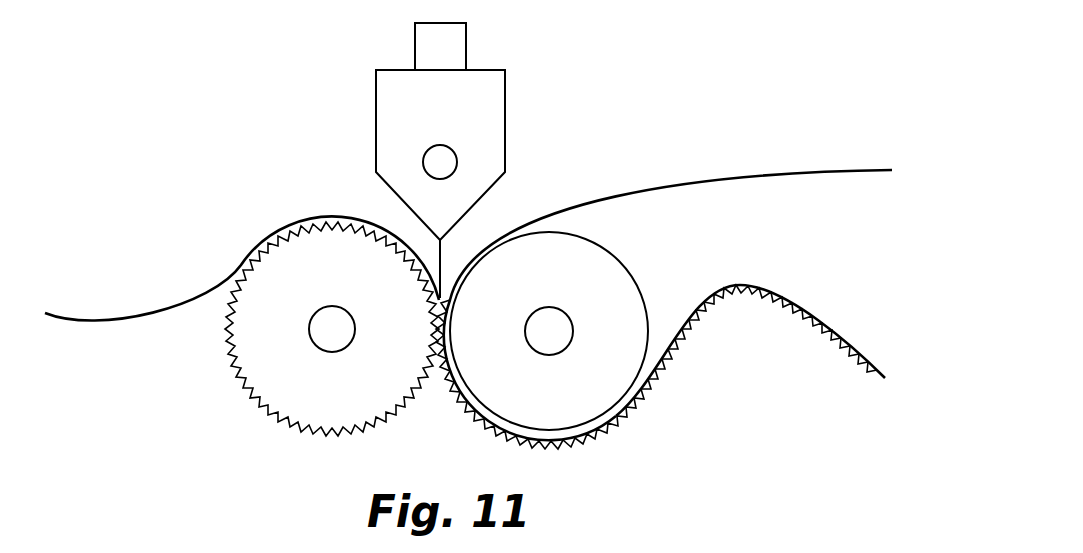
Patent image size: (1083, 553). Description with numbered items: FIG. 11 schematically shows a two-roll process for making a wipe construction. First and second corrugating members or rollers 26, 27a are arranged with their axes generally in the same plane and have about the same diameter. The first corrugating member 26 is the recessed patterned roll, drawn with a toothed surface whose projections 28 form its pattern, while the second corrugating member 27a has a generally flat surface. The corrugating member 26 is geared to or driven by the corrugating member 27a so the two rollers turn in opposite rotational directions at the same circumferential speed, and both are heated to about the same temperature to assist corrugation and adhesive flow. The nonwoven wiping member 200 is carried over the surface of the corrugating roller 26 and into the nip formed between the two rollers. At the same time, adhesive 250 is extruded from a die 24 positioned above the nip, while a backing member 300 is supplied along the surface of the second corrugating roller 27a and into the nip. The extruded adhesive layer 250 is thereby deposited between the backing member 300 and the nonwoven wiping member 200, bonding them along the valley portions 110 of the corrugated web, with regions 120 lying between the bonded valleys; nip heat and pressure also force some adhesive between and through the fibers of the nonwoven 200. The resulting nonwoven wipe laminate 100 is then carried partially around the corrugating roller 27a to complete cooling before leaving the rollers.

The die 24 is at (497, 96).
The adhesive 250 is at (441, 262).
The backing member 300 is at (708, 178).
The nonwoven wipe laminate 100 is at (796, 286).
The nonwoven wiping member 200 is at (113, 320).
The second corrugating member 27a is at (622, 273).
The first corrugating member 26 is at (333, 420).
The teeth 28 is at (243, 390).
The valley portions 110 is at (517, 447).
The unbonded regions 120 is at (602, 443).